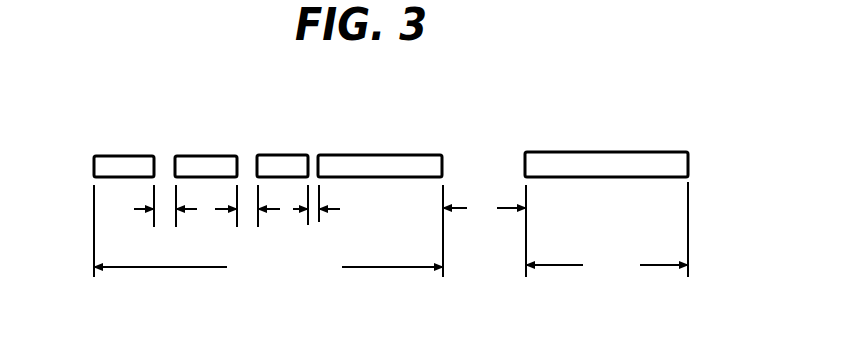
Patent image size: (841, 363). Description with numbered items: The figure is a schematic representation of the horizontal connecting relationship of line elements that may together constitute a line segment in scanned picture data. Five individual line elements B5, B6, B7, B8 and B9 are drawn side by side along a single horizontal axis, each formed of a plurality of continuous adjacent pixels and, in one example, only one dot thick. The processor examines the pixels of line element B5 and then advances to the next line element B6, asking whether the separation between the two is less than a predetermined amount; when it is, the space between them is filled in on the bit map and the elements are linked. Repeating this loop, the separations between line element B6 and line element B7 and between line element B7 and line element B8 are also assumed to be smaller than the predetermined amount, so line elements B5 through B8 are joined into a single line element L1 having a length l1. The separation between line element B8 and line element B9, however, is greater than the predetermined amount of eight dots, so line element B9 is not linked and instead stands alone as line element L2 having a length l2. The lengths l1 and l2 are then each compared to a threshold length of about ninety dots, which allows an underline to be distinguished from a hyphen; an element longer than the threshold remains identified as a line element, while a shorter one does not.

The line element B5 is at (127, 161).
The line element B6 is at (205, 161).
The line element B7 is at (296, 144).
The line element B8 is at (391, 141).
The line element B9 is at (606, 146).
The line element L1 is at (228, 107).
The line element L2 is at (616, 102).
The length l1 is at (268, 264).
The length l2 is at (607, 252).